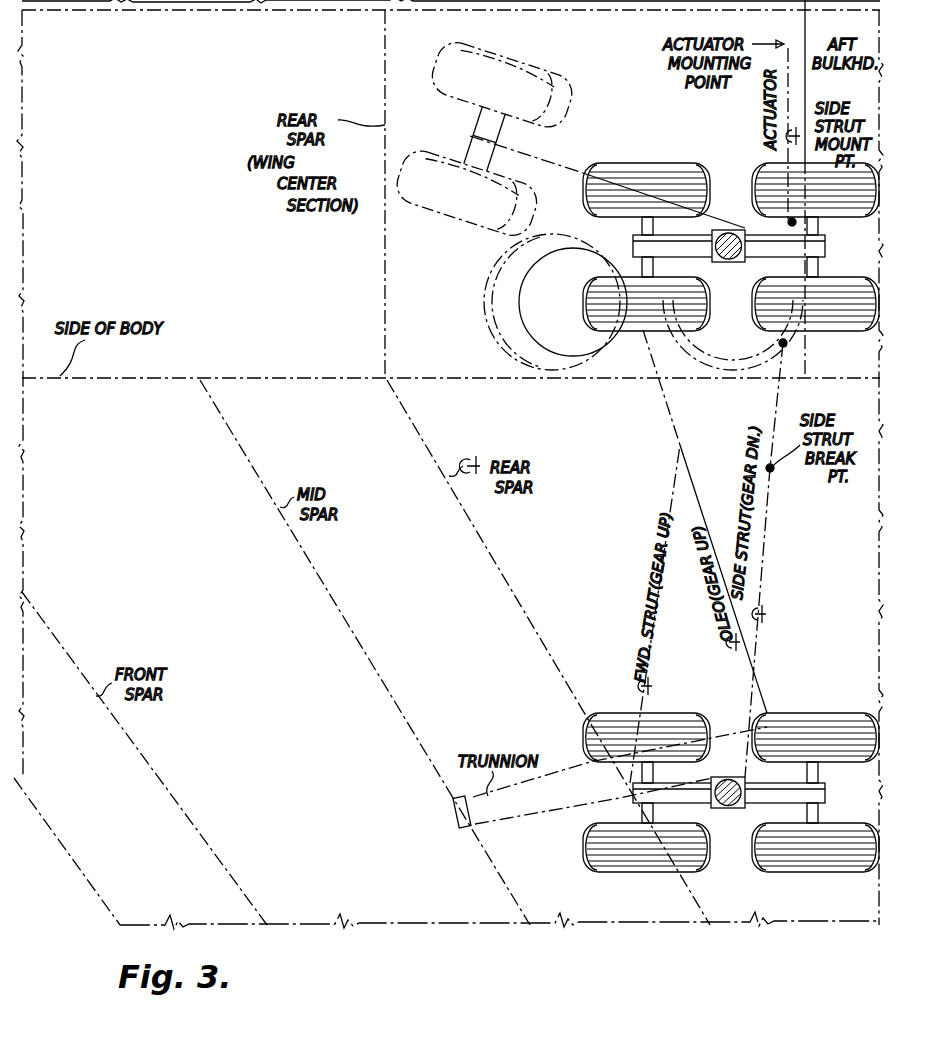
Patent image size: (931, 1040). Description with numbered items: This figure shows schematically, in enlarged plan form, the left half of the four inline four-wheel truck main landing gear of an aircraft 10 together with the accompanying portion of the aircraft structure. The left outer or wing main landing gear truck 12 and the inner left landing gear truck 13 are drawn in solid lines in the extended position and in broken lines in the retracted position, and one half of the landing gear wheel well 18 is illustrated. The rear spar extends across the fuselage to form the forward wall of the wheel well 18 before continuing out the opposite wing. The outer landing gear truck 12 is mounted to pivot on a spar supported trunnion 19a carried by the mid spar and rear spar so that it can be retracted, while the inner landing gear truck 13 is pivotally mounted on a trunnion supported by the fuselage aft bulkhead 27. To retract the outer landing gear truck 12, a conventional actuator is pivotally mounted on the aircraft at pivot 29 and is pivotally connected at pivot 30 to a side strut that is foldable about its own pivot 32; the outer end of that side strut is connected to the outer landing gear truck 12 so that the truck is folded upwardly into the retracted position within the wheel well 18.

The aircraft 10 is at (172, 101).
The outer landing gear truck 12 is at (810, 715).
The inner landing gear truck 13 is at (662, 166).
The landing gear wheel well 18 is at (386, 279).
The spar supported trunnion 19a is at (583, 796).
The fuselage aft bulkhead 27 is at (807, 82).
The actuator pivot 29 is at (796, 224).
The actuator-to-side-strut pivot 30 is at (787, 345).
The side strut fold pivot 32 is at (773, 471).